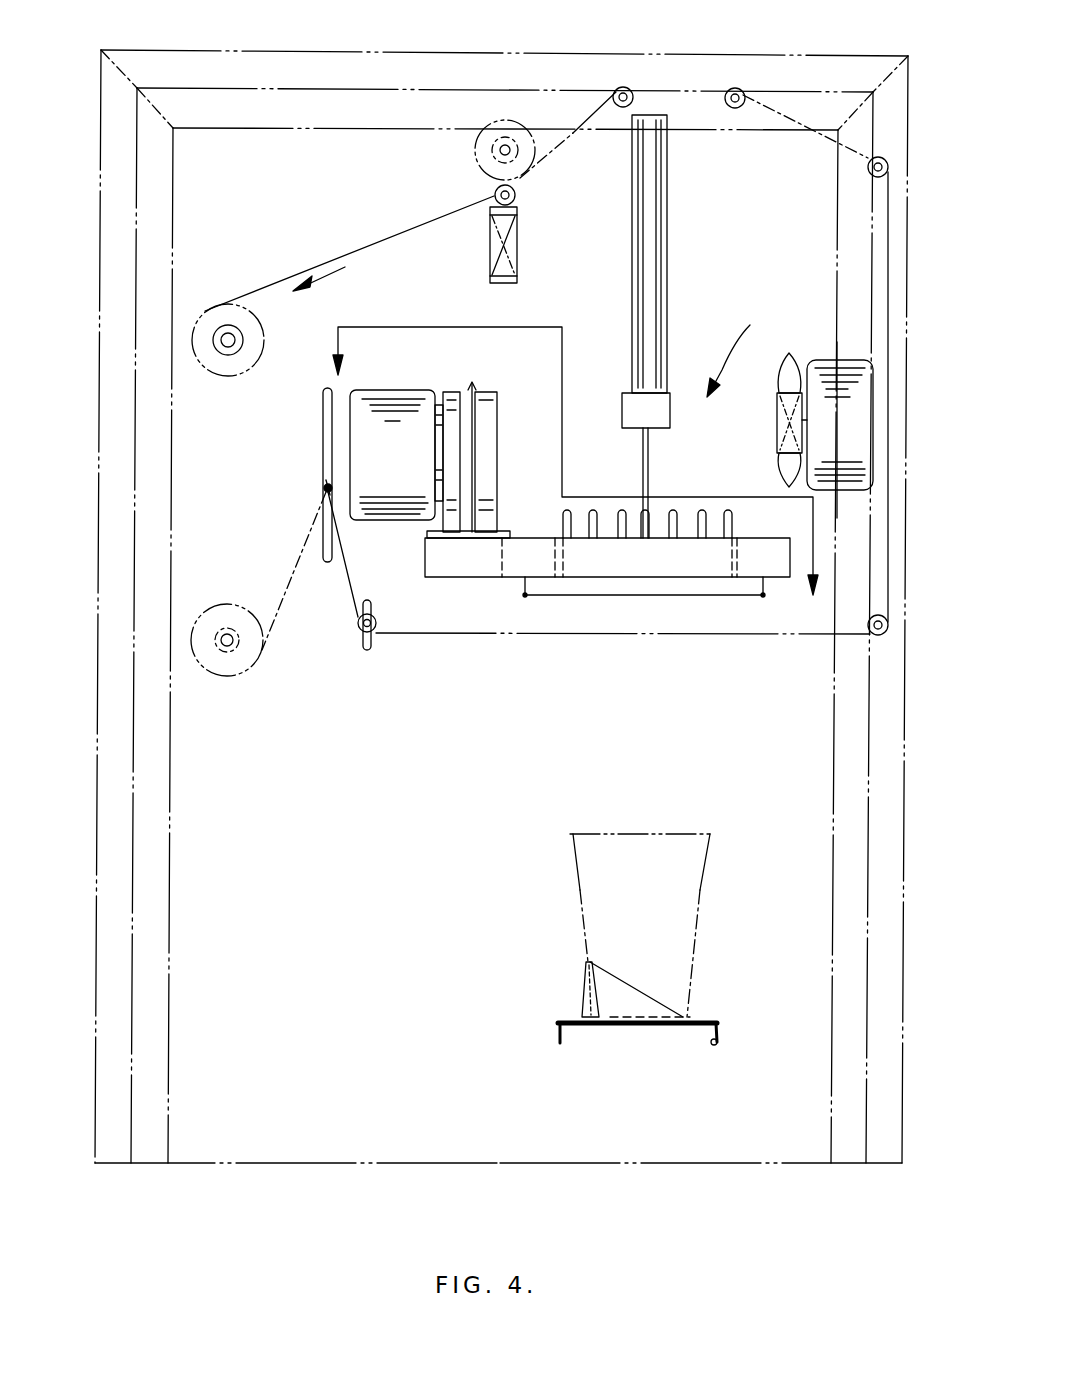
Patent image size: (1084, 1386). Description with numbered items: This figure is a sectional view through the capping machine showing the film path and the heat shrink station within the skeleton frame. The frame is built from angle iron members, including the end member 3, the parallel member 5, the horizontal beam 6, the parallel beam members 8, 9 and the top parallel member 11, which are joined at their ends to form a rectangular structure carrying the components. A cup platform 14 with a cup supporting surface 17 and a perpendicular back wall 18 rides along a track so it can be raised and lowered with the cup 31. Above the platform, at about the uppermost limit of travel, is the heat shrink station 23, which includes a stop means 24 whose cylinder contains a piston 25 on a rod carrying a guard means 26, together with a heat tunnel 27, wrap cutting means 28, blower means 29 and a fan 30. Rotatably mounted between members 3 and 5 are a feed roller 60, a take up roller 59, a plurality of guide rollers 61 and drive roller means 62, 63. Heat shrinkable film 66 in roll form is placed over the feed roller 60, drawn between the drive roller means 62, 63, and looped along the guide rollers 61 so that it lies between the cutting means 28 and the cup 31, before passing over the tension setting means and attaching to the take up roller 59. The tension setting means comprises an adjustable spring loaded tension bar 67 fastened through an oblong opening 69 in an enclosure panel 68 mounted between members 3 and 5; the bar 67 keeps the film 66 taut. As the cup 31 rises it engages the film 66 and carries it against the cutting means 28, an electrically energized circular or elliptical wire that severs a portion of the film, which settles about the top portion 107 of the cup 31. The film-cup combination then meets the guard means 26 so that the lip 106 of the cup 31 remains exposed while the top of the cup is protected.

The end member 3 is at (893, 110).
The parallel member 5 is at (110, 222).
The horizontal beam 6 is at (585, 461).
The parallel beam member 8 is at (860, 1165).
The parallel beam member 9 is at (108, 1166).
The top parallel member 11 is at (330, 90).
The cup platform 14 is at (548, 1021).
The cup supporting surface 17 is at (692, 1015).
The back wall 18 is at (584, 1000).
The heat shrink station 23 is at (737, 353).
The stop means 24 is at (664, 196).
The piston 25 is at (650, 468).
The guard means 26 is at (732, 528).
The heat tunnel 27 is at (785, 555).
The wrap cutting means 28 is at (768, 598).
The blower means 29 is at (385, 392).
The fan 30 is at (832, 360).
The cup 31 is at (700, 860).
The take up roller 59 is at (200, 318).
The feed roller 60 is at (210, 605).
The guide rollers 61 is at (630, 90).
The drive roller means 62 is at (490, 124).
The drive roller means 63 is at (518, 198).
The heat shrinkable film 66 is at (286, 275).
The tension bar 67 is at (325, 485).
The enclosure panel 68 is at (218, 148).
The oblong opening 69 is at (320, 432).
The lip 106 is at (572, 838).
The top portion 107 is at (586, 862).